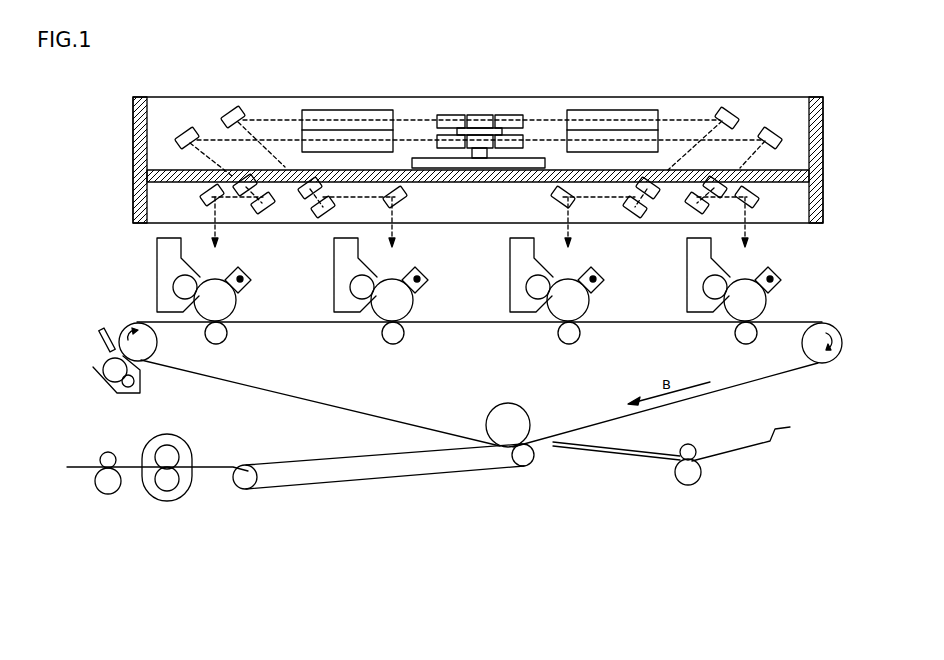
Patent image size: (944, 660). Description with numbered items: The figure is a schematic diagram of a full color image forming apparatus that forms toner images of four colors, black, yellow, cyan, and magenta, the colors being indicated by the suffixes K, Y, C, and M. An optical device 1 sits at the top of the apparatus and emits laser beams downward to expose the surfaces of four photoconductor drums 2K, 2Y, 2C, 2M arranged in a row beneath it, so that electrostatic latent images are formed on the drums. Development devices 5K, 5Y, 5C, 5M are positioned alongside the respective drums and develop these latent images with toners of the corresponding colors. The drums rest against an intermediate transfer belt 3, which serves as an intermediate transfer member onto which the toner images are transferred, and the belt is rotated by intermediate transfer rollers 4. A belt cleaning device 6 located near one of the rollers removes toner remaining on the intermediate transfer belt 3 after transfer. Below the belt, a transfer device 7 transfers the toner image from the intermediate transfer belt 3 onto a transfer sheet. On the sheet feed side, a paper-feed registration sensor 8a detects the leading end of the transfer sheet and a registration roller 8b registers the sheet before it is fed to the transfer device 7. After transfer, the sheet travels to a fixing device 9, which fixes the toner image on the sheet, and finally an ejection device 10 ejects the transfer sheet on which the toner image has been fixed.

The optical device 1 is at (799, 98).
The photoconductor drum 2K is at (237, 301).
The photoconductor drum 2Y is at (414, 301).
The photoconductor drum 2C is at (590, 301).
The photoconductor drum 2M is at (767, 301).
The intermediate transfer belt 3 is at (305, 399).
The intermediate transfer rollers 4 is at (156, 342).
The development device 5K is at (157, 283).
The development device 5Y is at (334, 283).
The development device 5C is at (510, 283).
The development device 5M is at (687, 283).
The belt cleaning device 6 is at (126, 394).
The transfer device 7 is at (517, 465).
The paper-feed registration sensor 8a is at (701, 465).
The registration roller 8b is at (677, 488).
The fixing device 9 is at (170, 437).
The ejection device 10 is at (100, 498).